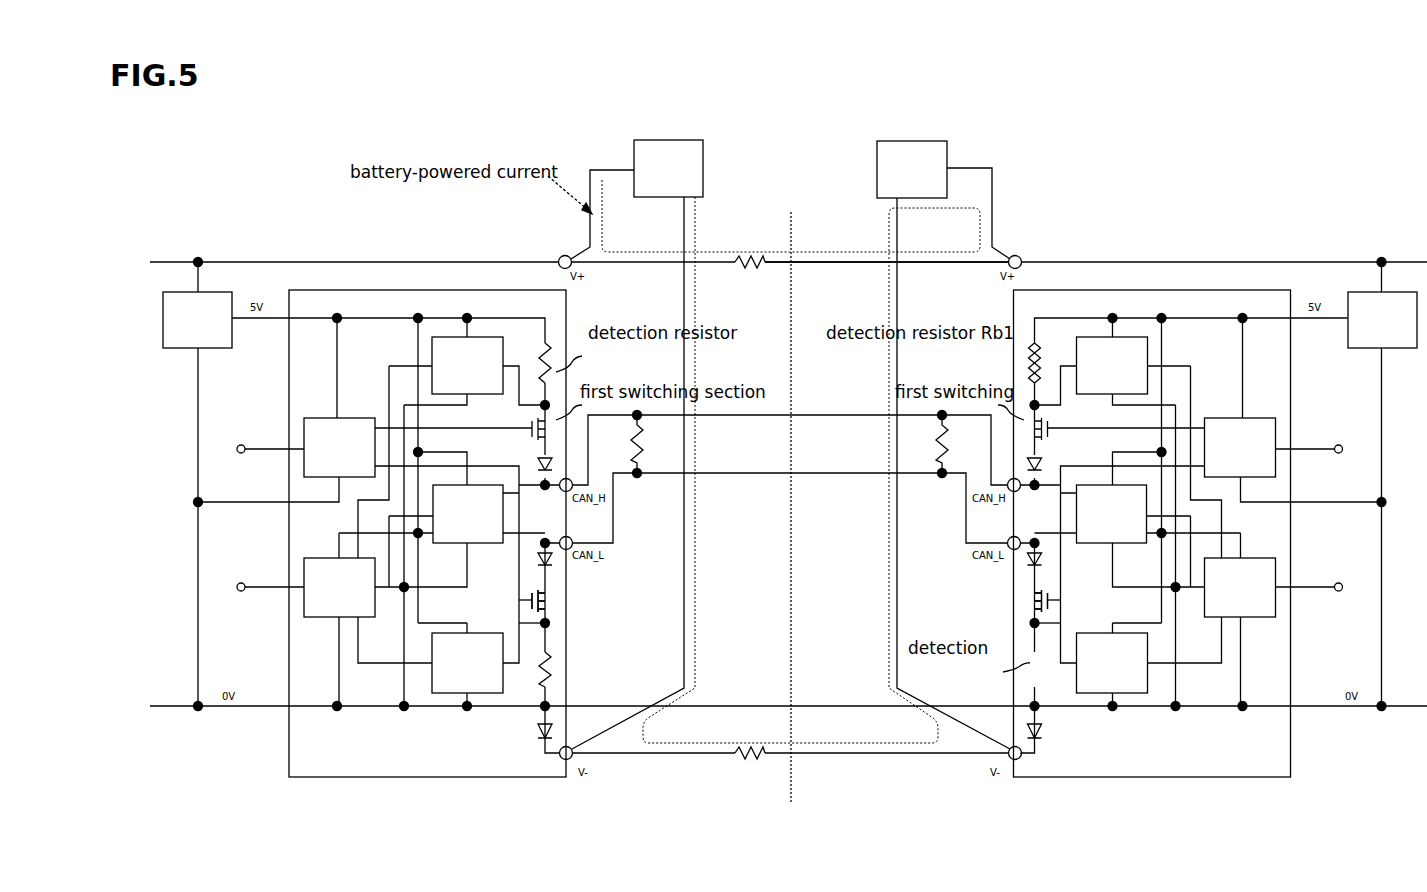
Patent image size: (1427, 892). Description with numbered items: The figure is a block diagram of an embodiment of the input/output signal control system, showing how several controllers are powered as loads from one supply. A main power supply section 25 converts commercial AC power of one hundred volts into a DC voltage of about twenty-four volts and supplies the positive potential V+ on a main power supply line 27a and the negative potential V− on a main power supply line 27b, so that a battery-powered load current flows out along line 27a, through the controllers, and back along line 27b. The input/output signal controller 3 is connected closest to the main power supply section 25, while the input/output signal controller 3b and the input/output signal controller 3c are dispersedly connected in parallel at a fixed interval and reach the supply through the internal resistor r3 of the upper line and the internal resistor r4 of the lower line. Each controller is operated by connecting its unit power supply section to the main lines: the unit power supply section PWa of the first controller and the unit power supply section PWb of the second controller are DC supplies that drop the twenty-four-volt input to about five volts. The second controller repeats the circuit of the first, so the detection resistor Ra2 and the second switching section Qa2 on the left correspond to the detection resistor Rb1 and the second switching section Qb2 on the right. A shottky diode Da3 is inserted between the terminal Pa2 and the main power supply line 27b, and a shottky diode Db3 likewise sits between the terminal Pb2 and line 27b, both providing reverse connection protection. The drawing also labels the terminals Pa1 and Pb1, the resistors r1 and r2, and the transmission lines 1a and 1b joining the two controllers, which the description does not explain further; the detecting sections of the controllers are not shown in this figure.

The main power supply section 25 is at (634, 153).
The input/output signal controller 3c is at (955, 154).
The input/output signal controller 3 is at (375, 495).
The input/output signal controller 3b is at (1200, 491).
The internal resistor r3 is at (746, 257).
The internal resistor r4 is at (752, 758).
The main power supply line 27a is at (863, 263).
The main power supply line 27b is at (918, 757).
The terminal Pa1 is at (467, 312).
The terminal Pa2 is at (542, 708).
The terminal Pb1 is at (1113, 312).
The terminal Pb2 is at (1038, 708).
The unit power supply section PWa is at (237, 346).
The unit power supply section PWb is at (1355, 346).
The detection resistor Rb1 is at (1029, 364).
The detection resistor Ra2 is at (614, 672).
The resistor r1 is at (650, 444).
The resistor r2 is at (934, 444).
The second switching section Qa2 is at (552, 598).
The second switching section Qb2 is at (1030, 596).
The shottky diode Da3 is at (528, 743).
The shottky diode Db3 is at (1054, 743).
The transmission line 1a is at (780, 417).
The transmission line 1b is at (822, 385).